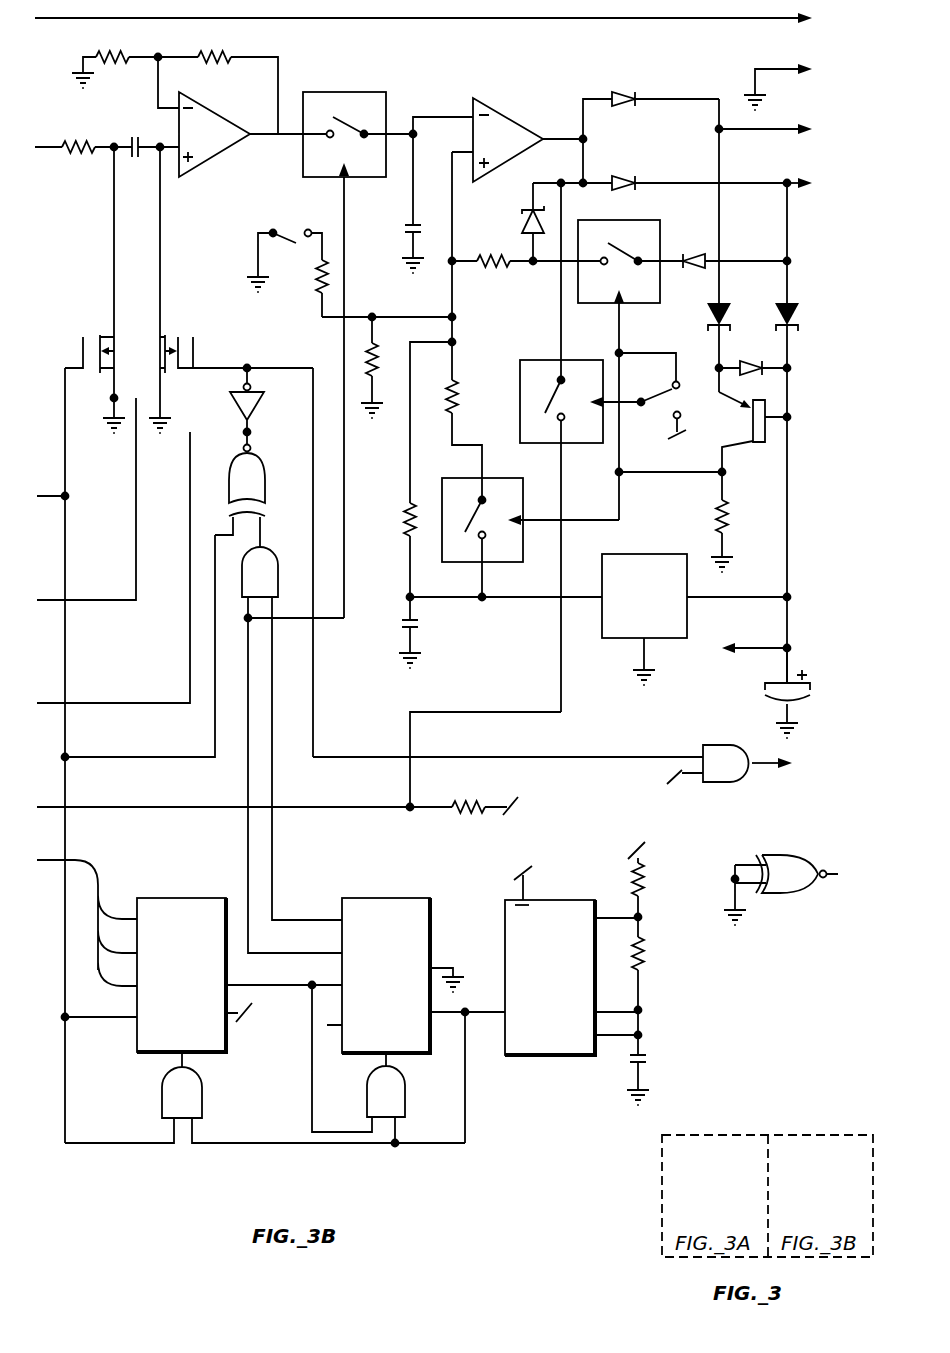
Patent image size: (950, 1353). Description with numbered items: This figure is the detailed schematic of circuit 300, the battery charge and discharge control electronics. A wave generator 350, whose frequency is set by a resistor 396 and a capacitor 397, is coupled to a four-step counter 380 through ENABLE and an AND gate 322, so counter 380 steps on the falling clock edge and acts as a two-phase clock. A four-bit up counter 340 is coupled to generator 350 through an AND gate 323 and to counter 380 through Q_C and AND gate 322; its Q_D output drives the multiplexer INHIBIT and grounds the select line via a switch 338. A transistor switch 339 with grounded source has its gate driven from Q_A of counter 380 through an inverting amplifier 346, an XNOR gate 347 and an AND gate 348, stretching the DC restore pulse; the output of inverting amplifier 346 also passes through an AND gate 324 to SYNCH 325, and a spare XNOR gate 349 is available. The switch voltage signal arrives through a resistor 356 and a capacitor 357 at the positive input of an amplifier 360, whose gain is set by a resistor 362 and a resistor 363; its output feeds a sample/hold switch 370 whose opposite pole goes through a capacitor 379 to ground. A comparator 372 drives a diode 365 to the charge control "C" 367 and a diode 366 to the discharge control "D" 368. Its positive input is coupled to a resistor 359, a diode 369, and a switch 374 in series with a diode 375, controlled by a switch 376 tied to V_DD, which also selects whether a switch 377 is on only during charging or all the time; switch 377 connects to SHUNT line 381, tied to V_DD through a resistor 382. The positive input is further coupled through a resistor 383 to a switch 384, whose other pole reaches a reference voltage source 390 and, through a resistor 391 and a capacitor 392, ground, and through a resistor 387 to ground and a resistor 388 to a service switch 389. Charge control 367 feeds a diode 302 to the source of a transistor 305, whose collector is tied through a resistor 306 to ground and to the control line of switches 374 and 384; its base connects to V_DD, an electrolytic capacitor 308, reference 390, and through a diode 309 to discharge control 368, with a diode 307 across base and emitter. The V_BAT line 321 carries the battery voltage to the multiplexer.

The circuit 300 is at (454, 635).
The diode 302 is at (710, 315).
The transistor 305 is at (770, 441).
The resistor 306 is at (728, 520).
The diode 307 is at (750, 358).
The electrolytic capacitor 308 is at (805, 703).
The diode 309 is at (790, 303).
The V_BAT line 321 is at (453, 20).
The AND gate 322 is at (405, 1083).
The AND gate 323 is at (202, 1093).
The AND gate 324 is at (737, 745).
The SYNCH 325 is at (835, 776).
The switch 338 is at (110, 333).
The transistor switch 339 is at (167, 333).
The 4-bit up counter 340 is at (172, 897).
The inverting amplifier 346 is at (262, 413).
The XNOR gate 347 is at (287, 455).
The AND gate 348 is at (278, 565).
The XNOR gate 349 is at (807, 861).
The wave generator 350 is at (548, 898).
The resistor 356 is at (93, 117).
The capacitor 357 is at (143, 133).
The resistor 359 is at (487, 270).
The amplifier 360 is at (198, 97).
The resistor 362 is at (115, 50).
The resistor 363 is at (235, 55).
The diode 365 is at (623, 95).
The diode 366 is at (623, 178).
The charge control "C" 367 is at (770, 127).
The discharge control "D" 368 is at (748, 182).
The diode 369 is at (522, 218).
The switch 370 is at (330, 90).
The comparator 372 is at (500, 108).
The switch 374 is at (630, 218).
The diode 375 is at (695, 248).
The switch 376 is at (669, 392).
The switch 377 is at (552, 358).
The capacitor 379 is at (407, 223).
The 4-step counter 380 is at (393, 897).
The SHUNT line 381 is at (290, 808).
The resistor 382 is at (477, 815).
The resistor 383 is at (455, 380).
The switch 384 is at (493, 478).
The resistor 387 is at (360, 358).
The resistor 388 is at (317, 300).
The service switch 389 is at (299, 238).
The reference voltage source 390 is at (628, 553).
The resistor 391 is at (407, 512).
The capacitor 392 is at (403, 628).
The resistor 396 is at (647, 962).
The capacitor 397 is at (648, 1055).